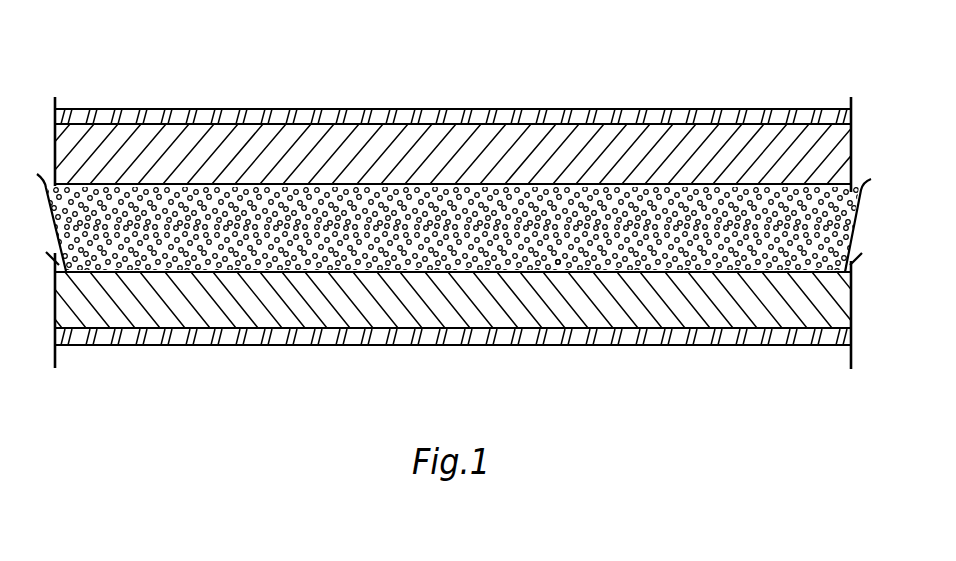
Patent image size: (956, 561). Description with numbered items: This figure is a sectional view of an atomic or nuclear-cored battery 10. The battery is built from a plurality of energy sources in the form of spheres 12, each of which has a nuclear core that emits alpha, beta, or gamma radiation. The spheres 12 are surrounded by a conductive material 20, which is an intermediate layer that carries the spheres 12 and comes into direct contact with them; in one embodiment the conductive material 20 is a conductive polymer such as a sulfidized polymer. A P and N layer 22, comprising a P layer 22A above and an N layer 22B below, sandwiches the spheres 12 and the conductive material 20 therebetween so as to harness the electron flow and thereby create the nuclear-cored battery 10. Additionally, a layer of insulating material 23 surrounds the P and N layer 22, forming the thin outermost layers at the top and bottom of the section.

The nuclear-cored battery 10 is at (240, 56).
The spheres 12 is at (216, 266).
The conductive material 20 is at (558, 263).
The P and N layer 22 is at (521, 108).
The P layer 22A is at (320, 136).
The N layer 22B is at (433, 318).
The insulating material 23 is at (181, 108).